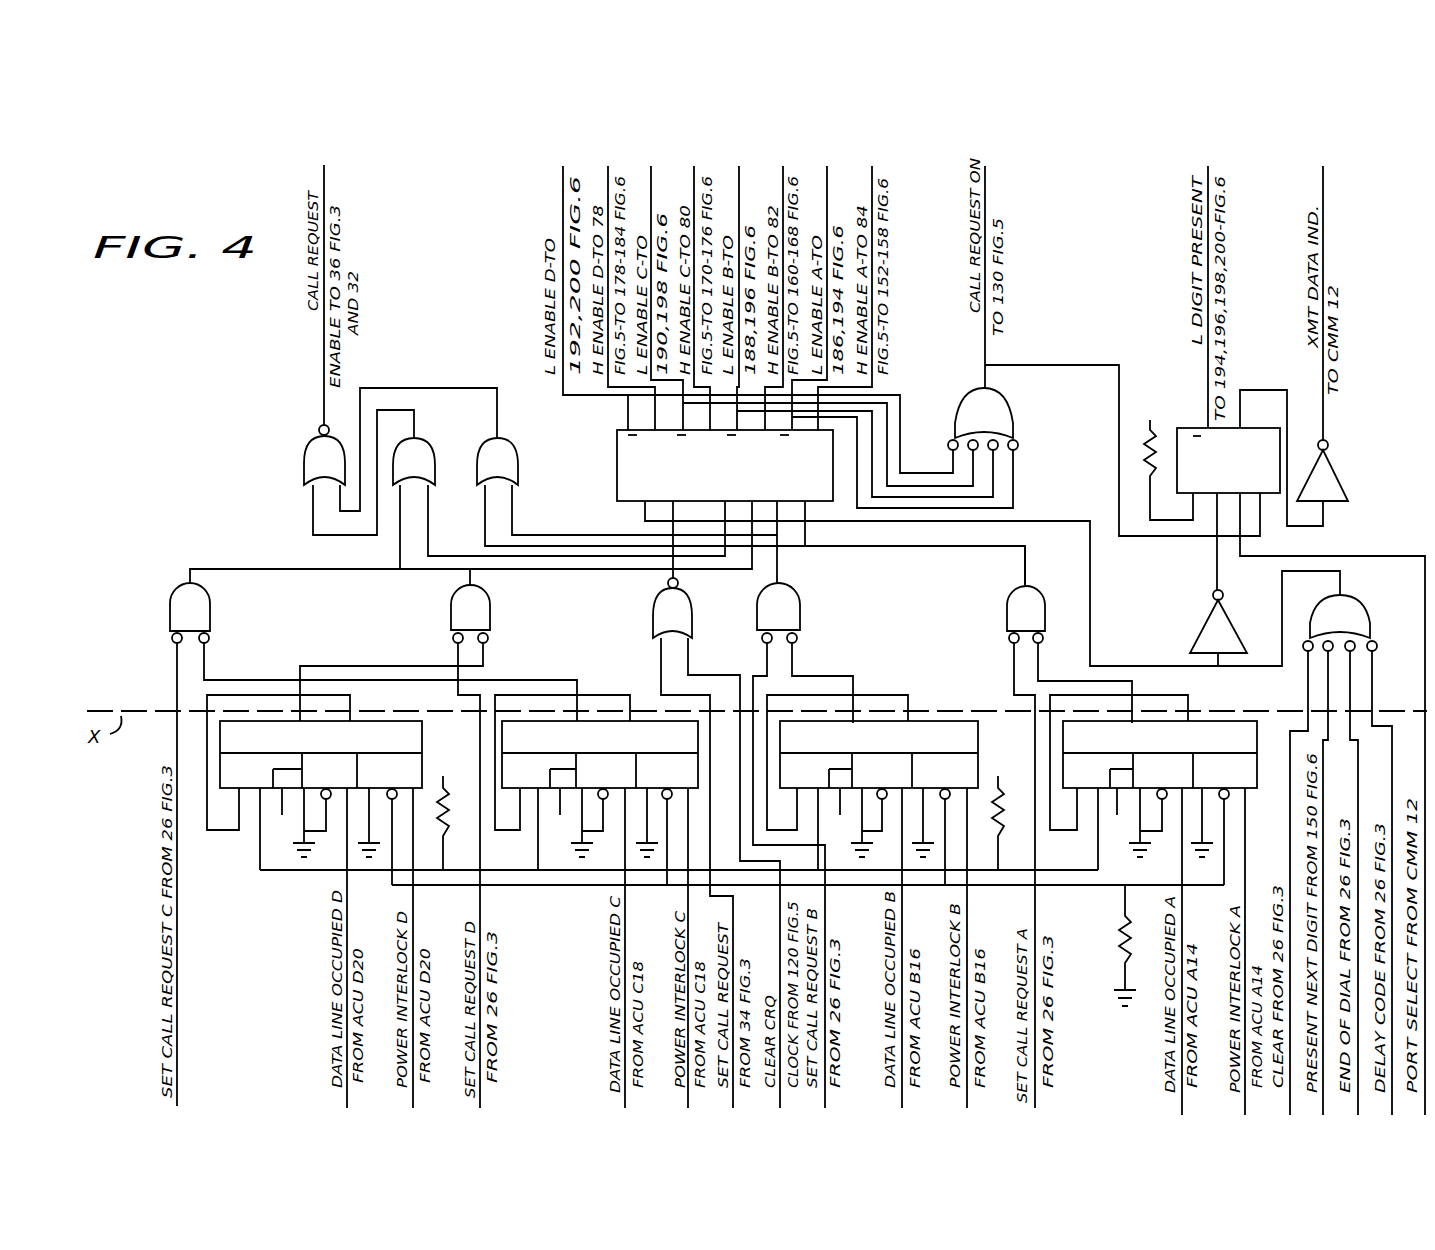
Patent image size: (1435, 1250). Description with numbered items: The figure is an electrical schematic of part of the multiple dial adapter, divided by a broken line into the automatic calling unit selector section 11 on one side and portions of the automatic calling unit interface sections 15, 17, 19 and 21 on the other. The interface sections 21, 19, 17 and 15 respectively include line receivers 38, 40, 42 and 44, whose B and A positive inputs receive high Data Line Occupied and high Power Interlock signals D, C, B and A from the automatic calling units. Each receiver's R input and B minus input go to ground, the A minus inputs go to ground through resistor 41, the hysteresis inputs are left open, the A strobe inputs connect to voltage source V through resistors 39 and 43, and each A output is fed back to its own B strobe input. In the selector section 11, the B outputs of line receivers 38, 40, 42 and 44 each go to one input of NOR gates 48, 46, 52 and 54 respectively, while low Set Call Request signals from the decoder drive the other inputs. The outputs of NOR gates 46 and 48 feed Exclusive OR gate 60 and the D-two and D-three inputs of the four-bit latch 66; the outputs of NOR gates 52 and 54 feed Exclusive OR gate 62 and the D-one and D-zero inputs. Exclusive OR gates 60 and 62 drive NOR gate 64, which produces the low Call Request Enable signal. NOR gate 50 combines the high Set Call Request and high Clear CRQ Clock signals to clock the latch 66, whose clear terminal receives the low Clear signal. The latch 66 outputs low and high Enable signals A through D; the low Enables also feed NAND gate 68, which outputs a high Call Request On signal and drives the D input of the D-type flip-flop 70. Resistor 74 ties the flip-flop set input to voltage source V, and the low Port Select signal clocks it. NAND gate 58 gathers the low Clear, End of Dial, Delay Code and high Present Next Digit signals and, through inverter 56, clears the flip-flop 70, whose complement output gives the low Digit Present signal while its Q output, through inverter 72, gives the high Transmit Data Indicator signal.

The automatic calling unit selector section 11 is at (146, 637).
The automatic calling unit interface section 15 is at (1098, 916).
The automatic calling unit interface section 17 is at (869, 942).
The automatic calling unit interface section 19 is at (563, 912).
The automatic calling unit interface section 21 is at (276, 898).
The line receiver 38 is at (422, 757).
The resistor 39 is at (448, 812).
The line receiver 40 is at (648, 722).
The resistor 41 is at (1128, 958).
The line receiver 42 is at (928, 722).
The resistor 43 is at (1002, 826).
The line receiver 44 is at (1258, 738).
The NOR gate 46 is at (212, 626).
The NOR gate 48 is at (492, 626).
The NOR gate 50 is at (694, 626).
The NOR gate 52 is at (802, 626).
The NOR gate 54 is at (1008, 616).
The inverter 56 is at (1205, 618).
The NAND gate 58 is at (1358, 618).
The Exclusive OR gate 60 is at (432, 455).
The Exclusive OR gate 62 is at (517, 455).
The NOR gate 64 is at (308, 452).
The 4-bit latch 66 is at (617, 475).
The NAND gate 68 is at (1003, 420).
The D-type flip-flop 70 is at (1190, 430).
The inverter 72 is at (1340, 472).
The resistor 74 is at (1148, 456).